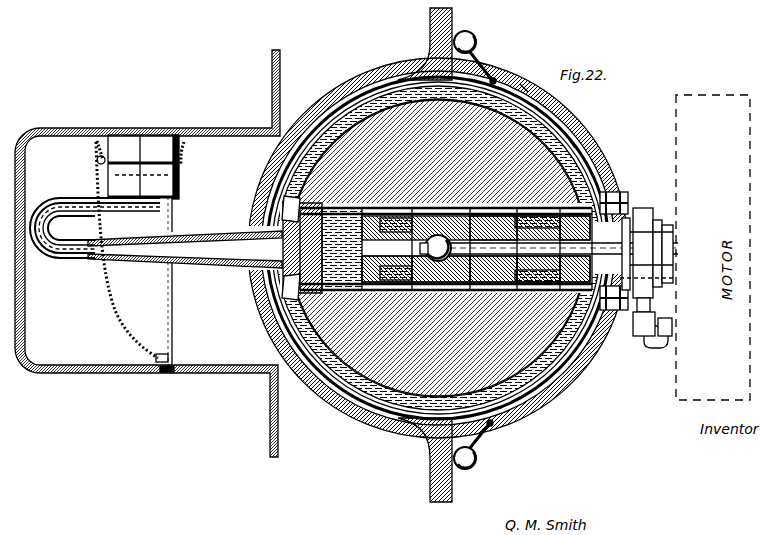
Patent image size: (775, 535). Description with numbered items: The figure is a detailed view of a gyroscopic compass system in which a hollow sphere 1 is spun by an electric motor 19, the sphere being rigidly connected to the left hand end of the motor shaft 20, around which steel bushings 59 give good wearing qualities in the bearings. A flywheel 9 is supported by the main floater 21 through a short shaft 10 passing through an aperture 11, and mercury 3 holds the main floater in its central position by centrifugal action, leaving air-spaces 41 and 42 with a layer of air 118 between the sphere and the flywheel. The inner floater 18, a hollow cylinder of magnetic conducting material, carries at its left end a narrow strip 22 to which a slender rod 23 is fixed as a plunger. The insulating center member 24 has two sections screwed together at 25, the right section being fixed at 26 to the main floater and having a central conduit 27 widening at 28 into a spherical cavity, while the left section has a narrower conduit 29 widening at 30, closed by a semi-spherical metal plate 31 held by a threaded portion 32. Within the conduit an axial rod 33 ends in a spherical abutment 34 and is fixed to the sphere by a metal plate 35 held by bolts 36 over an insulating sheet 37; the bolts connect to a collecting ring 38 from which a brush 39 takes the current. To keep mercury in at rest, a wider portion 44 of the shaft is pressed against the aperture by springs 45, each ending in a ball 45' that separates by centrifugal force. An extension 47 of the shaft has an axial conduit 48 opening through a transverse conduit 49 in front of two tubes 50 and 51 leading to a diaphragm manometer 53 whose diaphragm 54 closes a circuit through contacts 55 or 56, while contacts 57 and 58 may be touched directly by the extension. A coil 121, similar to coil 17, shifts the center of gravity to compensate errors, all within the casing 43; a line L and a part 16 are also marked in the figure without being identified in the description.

The hollow sphere 1 is at (318, 395).
The mercury 3 is at (372, 98).
The flywheel 9 is at (452, 20).
The short shaft 10 is at (262, 222).
The aperture 11 is at (262, 200).
The outer shell 16 is at (415, 70).
The coil 17 is at (438, 248).
The inner floater 18 is at (476, 206).
The electric motor 19 is at (675, 228).
The motor shaft 20 is at (652, 212).
The main floater 21 is at (540, 122).
The narrow strip 22 is at (343, 233).
The slender rod 23 is at (99, 238).
The center member 24 is at (485, 234).
The screw joint 25 is at (445, 221).
The fixing point 26 is at (463, 246).
The central conduit 27 is at (535, 224).
The spherical cavity 28 is at (553, 293).
The central conduit 29 is at (563, 273).
The semi-spherical wider portion 30 is at (433, 288).
The semi-spherical thin metal plate 31 is at (525, 288).
The threaded portion 32 is at (480, 285).
The rod 33 is at (387, 287).
The spherical abutment 34 is at (490, 271).
The metal plate 35 is at (612, 190).
The bolts 36 is at (615, 192).
The insulating sheet 37 is at (672, 248).
The collecting ring 38 is at (672, 284).
The brush 39 is at (645, 350).
The air-space 41 is at (640, 232).
The air-space 42 is at (280, 200).
The casing 43 is at (272, 90).
The wider portion 44 is at (285, 210).
The springs 45 is at (492, 248).
The ball 45' is at (481, 255).
The extension 47 is at (238, 262).
The axial conduit 48 is at (205, 262).
The transverse conduit 49 is at (100, 275).
The tube 50 is at (58, 198).
The tube 51 is at (70, 210).
The diaphragm manometer 53 is at (160, 135).
The diaphragm 54 is at (180, 170).
The contact 55 is at (106, 135).
The contact 56 is at (175, 135).
The contact 57 is at (175, 226).
The contact 58 is at (168, 300).
The steel bushings 59 is at (665, 222).
The line L is at (520, 96).
The layer of air 118 is at (330, 108).
The coil 121 is at (575, 118).